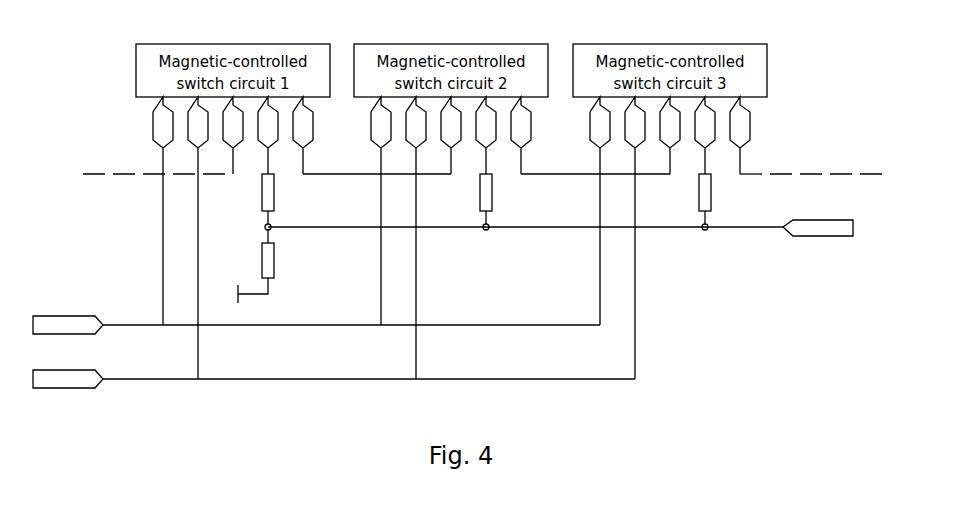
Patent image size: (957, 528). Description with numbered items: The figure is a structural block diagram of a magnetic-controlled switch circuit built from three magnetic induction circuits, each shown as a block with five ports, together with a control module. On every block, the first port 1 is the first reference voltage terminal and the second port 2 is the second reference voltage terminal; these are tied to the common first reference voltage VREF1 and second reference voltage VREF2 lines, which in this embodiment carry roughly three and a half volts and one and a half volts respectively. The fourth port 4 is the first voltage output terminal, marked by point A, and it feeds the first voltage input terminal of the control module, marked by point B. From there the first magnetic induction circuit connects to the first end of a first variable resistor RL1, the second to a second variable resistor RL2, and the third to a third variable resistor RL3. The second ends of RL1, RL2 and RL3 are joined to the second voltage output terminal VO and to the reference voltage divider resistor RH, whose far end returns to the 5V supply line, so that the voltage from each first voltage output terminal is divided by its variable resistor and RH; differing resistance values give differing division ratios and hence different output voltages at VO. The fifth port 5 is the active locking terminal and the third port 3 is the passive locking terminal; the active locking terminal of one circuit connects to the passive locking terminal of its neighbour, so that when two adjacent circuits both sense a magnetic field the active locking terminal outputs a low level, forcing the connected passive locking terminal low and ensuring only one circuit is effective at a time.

The first port 1 is at (381, 211).
The second port 2 is at (416, 238).
The third port 3 is at (451, 135).
The fourth port 4 is at (486, 135).
The fifth port 5 is at (521, 135).
The point A is at (284, 113).
The point B is at (281, 157).
The first variable resistor RL1 is at (283, 202).
The second variable resistor RL2 is at (501, 202).
The third variable resistor RL3 is at (720, 202).
The reference voltage divider resistor RH is at (268, 266).
The 5V supply 5V is at (222, 295).
The second voltage output terminal VO is at (818, 228).
The first reference voltage VREF1 is at (316, 325).
The second reference voltage VREF2 is at (334, 379).